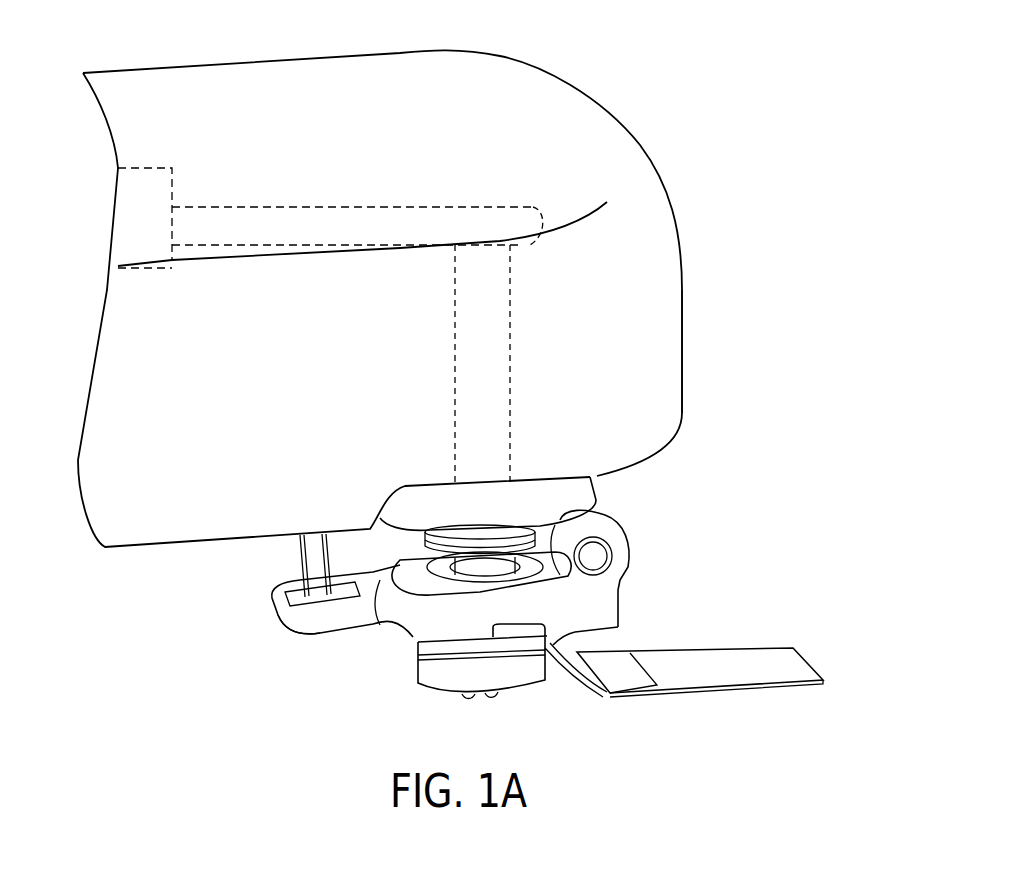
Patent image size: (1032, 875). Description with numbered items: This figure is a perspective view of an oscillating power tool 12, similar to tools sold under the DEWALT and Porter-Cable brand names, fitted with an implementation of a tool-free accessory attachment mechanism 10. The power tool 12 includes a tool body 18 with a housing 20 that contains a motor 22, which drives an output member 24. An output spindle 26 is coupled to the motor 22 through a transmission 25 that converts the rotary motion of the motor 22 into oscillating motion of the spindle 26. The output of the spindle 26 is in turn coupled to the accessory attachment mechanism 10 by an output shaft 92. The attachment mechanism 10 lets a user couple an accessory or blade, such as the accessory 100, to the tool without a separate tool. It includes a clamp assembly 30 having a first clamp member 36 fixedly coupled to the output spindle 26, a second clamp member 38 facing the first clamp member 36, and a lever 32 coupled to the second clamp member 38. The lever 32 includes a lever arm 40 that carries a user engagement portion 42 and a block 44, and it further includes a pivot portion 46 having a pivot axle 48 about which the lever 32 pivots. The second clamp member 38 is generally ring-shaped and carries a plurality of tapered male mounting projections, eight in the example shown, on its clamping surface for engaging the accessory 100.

The accessory attachment mechanism 10 is at (676, 455).
The oscillating power tool 12 is at (552, 66).
The tool body 18 is at (427, 72).
The housing 20 is at (670, 278).
The motor 22 is at (150, 180).
The output member 24 is at (270, 215).
The transmission 25 is at (535, 210).
The output spindle 26 is at (498, 360).
The clamp assembly 30 is at (676, 494).
The lever 32 is at (608, 618).
The first clamp member 36 is at (492, 650).
The second clamp member 38 is at (442, 672).
The lever arm 40 is at (332, 620).
The user engagement portion 42 is at (298, 647).
The block 44 is at (315, 548).
The pivot portion 46 is at (630, 589).
The pivot axle 48 is at (602, 558).
The output shaft 92 is at (492, 570).
The accessory 100 is at (800, 666).